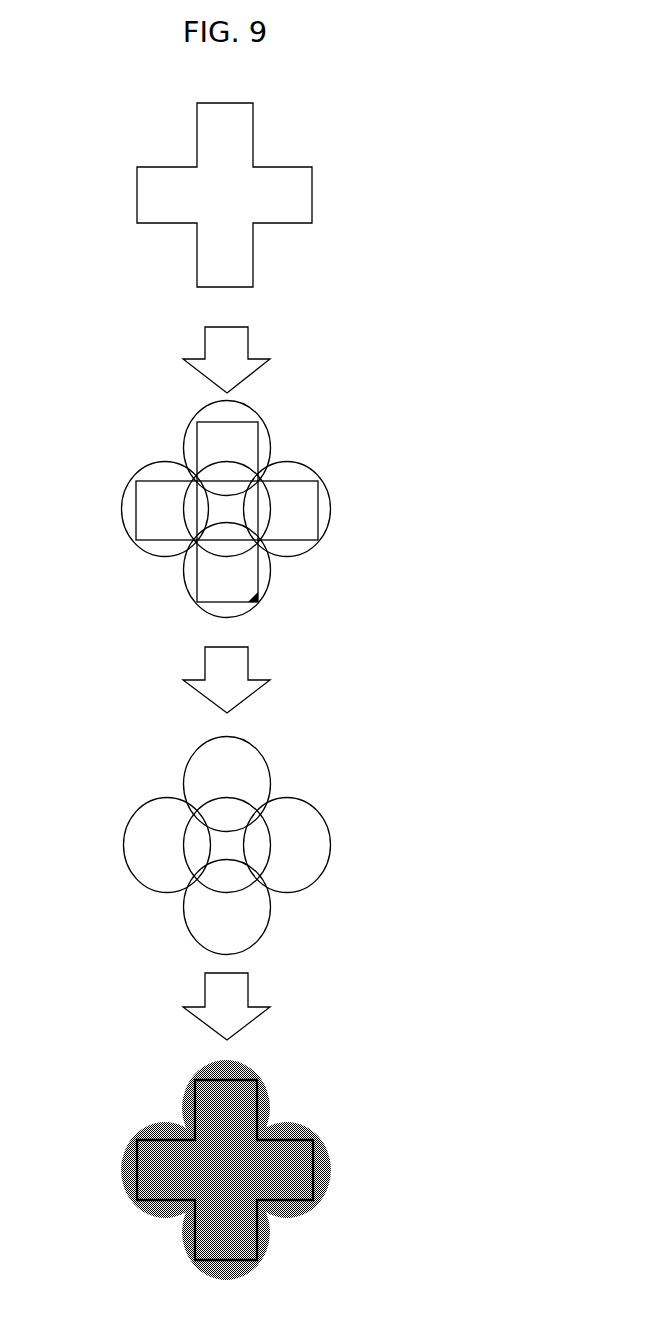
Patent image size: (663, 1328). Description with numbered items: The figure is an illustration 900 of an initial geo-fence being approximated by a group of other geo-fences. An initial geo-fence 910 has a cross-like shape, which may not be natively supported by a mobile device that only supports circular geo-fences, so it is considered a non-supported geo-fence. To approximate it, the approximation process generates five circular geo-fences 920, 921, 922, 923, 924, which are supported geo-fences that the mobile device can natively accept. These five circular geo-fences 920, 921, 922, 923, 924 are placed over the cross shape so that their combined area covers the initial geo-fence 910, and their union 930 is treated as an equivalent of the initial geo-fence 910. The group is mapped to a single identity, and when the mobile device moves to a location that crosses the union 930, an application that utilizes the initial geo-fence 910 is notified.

The illustration 900 is at (500, 140).
The initial geo-fence 910 is at (313, 194).
The circular geo-fence 920 is at (317, 477).
The circular geo-fence 921 is at (268, 435).
The circular geo-fence 922 is at (122, 497).
The circular geo-fence 923 is at (183, 510).
The circular geo-fence 924 is at (268, 567).
The union 930 is at (303, 1213).